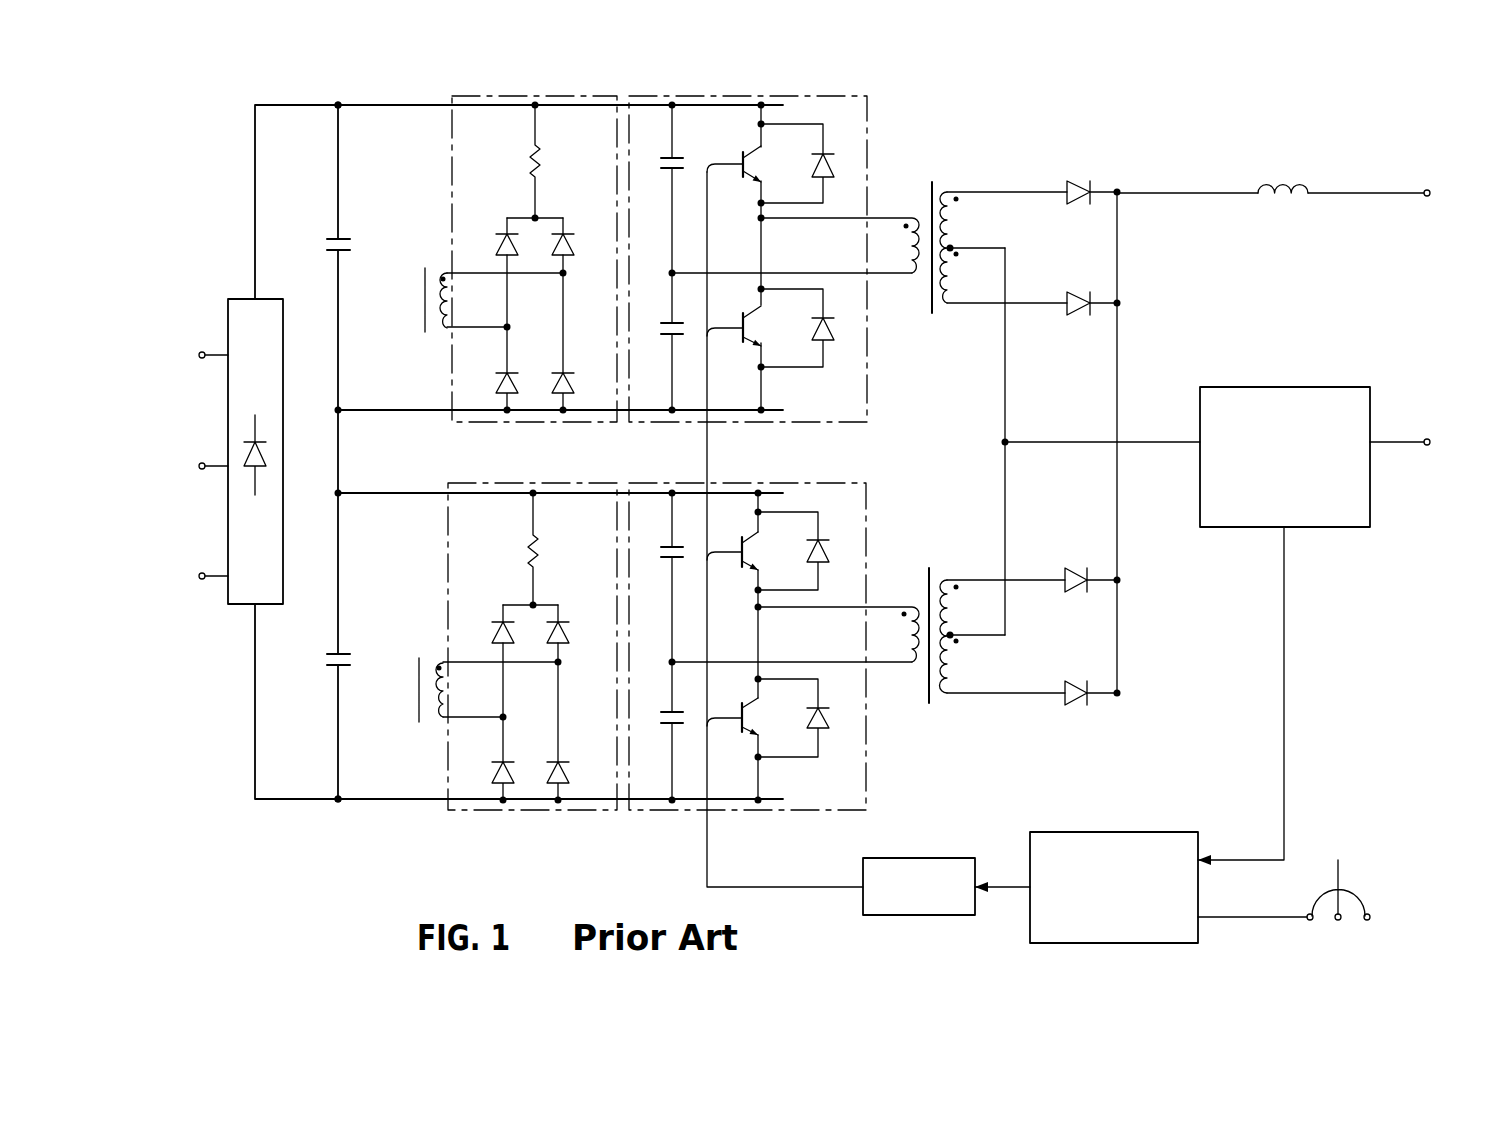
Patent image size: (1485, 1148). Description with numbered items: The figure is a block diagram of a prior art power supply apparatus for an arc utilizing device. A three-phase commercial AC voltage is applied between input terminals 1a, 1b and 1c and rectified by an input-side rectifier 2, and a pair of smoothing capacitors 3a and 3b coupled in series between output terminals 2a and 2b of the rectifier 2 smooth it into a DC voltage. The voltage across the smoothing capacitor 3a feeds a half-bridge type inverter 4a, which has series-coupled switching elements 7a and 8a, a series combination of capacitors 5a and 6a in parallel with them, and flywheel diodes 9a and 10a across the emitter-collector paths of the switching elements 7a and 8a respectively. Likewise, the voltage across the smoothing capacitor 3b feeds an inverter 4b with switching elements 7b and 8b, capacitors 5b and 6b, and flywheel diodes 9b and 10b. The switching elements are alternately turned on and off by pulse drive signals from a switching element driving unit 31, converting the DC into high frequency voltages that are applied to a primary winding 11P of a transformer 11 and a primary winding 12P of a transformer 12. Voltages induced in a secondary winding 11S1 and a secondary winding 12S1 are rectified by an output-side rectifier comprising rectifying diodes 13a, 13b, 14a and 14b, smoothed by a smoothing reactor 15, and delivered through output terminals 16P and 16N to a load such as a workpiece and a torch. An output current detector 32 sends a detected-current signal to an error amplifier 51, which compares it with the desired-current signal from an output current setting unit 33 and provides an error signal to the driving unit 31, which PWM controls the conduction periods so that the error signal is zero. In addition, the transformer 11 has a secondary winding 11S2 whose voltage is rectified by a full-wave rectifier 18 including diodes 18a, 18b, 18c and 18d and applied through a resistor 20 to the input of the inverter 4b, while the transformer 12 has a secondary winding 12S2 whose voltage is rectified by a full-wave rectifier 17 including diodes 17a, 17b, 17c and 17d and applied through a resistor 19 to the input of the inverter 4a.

The input terminal 1a is at (202, 358).
The input terminal 1b is at (202, 469).
The input terminal 1c is at (202, 579).
The input-side rectifier 2 is at (254, 318).
The output terminal of the rectifier 2a is at (340, 108).
The output terminal of the rectifier 2b is at (338, 803).
The smoothing capacitor 3a is at (320, 249).
The smoothing capacitor 3b is at (323, 661).
The half-bridge type inverter 4a is at (727, 424).
The inverter 4b is at (748, 812).
The capacitor 5a is at (662, 159).
The capacitor 5b is at (658, 549).
The capacitor 6a is at (662, 330).
The capacitor 6b is at (658, 720).
The switching element 7a is at (735, 188).
The switching element 7b is at (733, 576).
The switching element 8a is at (735, 354).
The switching element 8b is at (733, 742).
The flywheel diode 9a is at (838, 158).
The flywheel diode 9b is at (835, 546).
The flywheel diode 10a is at (827, 350).
The flywheel diode 10b is at (824, 740).
The transformer 11 is at (948, 165).
The primary winding 11P is at (908, 255).
The secondary winding 11S1 is at (957, 226).
The secondary winding 11S2 is at (424, 721).
The transformer 12 is at (947, 558).
The primary winding 12P is at (902, 645).
The secondary winding 12S1 is at (955, 672).
The secondary winding 12S2 is at (422, 270).
The rectifying diode 13a is at (1083, 181).
The rectifying diode 13b is at (1082, 317).
The rectifying diode 14a is at (1079, 566).
The rectifying diode 14b is at (1080, 708).
The smoothing reactor 15 is at (1295, 158).
The output terminal 16P is at (1440, 182).
The output terminal 16N is at (1440, 431).
The full-wave rectifier 17 is at (553, 340).
The diode 17a is at (489, 237).
The diode 17b is at (491, 387).
The diode 17c is at (573, 238).
The diode 17d is at (577, 386).
The full-wave rectifier 18 is at (545, 733).
The diode 18a is at (486, 634).
The diode 18b is at (488, 780).
The diode 18c is at (571, 638).
The diode 18d is at (574, 780).
The resistor 19 is at (529, 160).
The resistor 20 is at (519, 558).
The switching element driving unit 31 is at (939, 862).
The output current detector 32 is at (1262, 385).
The output current setting unit 33 is at (1370, 896).
The error amplifier 51 is at (1191, 849).